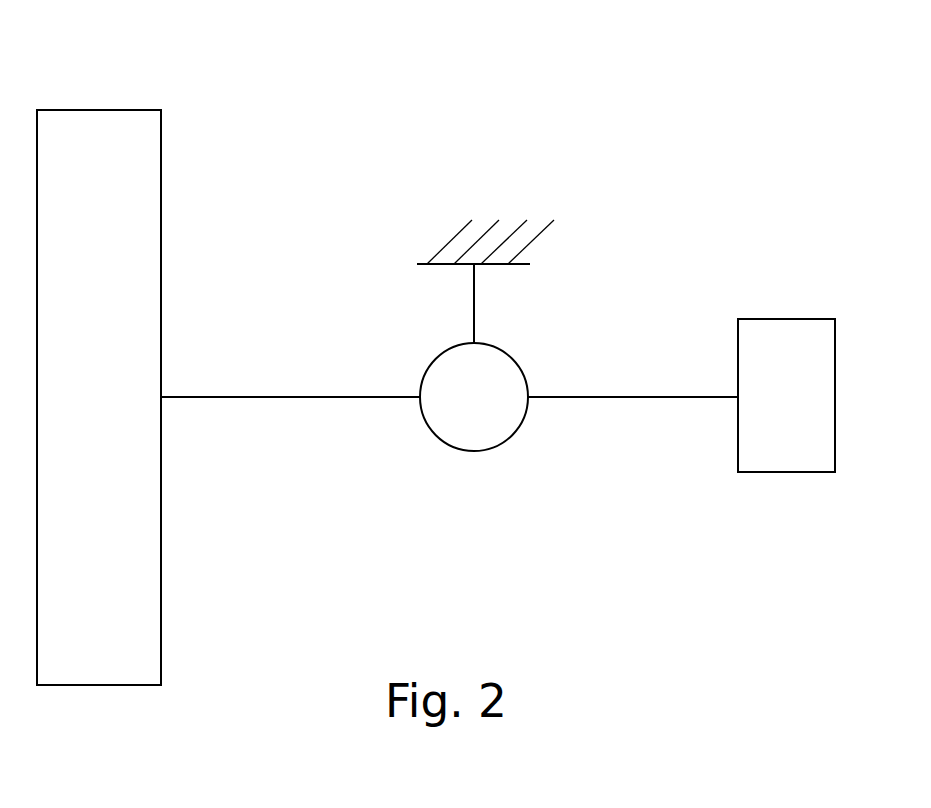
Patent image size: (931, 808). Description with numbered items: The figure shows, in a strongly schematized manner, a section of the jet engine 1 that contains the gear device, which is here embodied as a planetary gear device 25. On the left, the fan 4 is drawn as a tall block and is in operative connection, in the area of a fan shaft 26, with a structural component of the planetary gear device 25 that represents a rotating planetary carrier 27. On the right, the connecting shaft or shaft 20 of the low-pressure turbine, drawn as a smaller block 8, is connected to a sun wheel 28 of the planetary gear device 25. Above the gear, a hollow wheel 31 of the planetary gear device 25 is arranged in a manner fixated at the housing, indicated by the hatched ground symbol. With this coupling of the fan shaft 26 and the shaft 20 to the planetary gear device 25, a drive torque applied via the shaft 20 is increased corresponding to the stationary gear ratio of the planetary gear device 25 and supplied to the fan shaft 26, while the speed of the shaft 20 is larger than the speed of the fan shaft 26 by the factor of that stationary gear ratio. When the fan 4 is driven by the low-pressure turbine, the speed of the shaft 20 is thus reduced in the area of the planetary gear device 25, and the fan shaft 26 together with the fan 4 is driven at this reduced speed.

The jet engine 1 is at (277, 224).
The fan 4 is at (98, 110).
The drive unit / motor 8 is at (785, 319).
The shaft 20 is at (707, 398).
The planetary gear device 25 is at (470, 466).
The fan shaft 26 is at (195, 397).
The planetary carrier 27 is at (418, 397).
The sun wheel 28 is at (598, 395).
The hollow wheel 31 is at (473, 314).